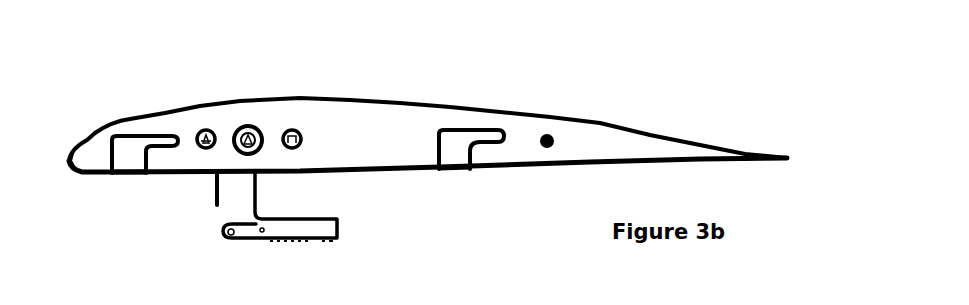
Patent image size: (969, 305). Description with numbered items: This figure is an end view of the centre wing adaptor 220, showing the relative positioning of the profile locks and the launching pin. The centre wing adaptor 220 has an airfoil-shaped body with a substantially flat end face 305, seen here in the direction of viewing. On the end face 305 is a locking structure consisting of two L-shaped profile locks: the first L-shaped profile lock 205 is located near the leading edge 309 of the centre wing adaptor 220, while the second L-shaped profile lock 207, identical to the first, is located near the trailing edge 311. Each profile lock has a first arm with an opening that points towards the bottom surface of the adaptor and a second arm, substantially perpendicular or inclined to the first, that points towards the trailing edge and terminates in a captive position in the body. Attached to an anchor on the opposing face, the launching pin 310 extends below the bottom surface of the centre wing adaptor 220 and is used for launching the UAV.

The centre wing adaptor 220 is at (538, 86).
The first L-shaped profile lock 205 is at (132, 134).
The second L-shaped profile lock 207 is at (485, 129).
The end face 305 is at (375, 147).
The leading edge 309 is at (107, 164).
The launching pin 310 is at (298, 228).
The trailing edge 311 is at (603, 149).